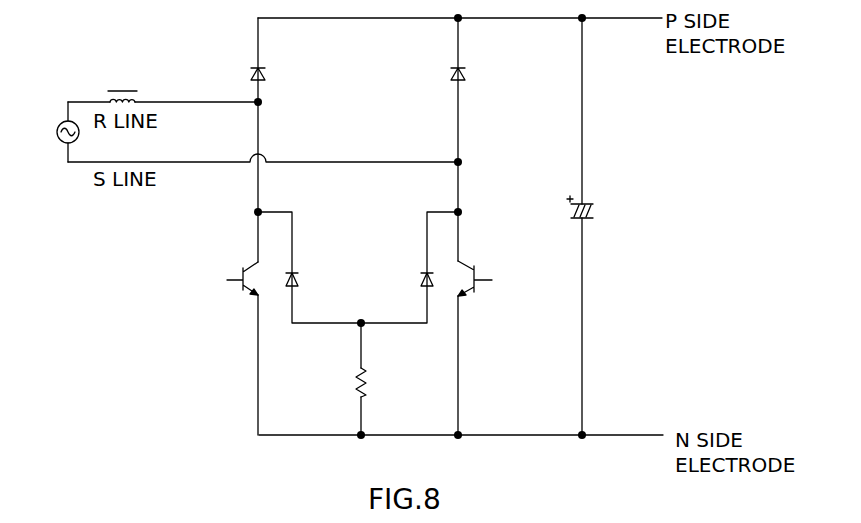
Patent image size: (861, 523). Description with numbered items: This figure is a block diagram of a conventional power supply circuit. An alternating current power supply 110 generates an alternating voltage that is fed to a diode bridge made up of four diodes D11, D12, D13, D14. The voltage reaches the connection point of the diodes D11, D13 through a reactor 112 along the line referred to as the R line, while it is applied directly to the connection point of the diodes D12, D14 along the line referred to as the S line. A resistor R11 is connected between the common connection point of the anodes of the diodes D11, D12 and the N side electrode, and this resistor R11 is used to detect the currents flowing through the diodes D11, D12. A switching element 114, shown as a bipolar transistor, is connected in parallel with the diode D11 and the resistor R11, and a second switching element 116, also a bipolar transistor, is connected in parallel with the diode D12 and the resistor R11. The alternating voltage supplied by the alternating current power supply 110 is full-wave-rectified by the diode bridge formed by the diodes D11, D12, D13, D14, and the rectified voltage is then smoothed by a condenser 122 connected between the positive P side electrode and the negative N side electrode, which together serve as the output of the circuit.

The alternating current power supply 110 is at (58, 124).
The reactor 112 is at (117, 89).
The switching element 114 is at (243, 272).
The switching element 116 is at (462, 262).
The condenser 122 is at (590, 200).
The diode D11 is at (300, 279).
The diode D12 is at (419, 279).
The diode D13 is at (266, 72).
The diode D14 is at (466, 72).
The resistor R11 is at (384, 383).